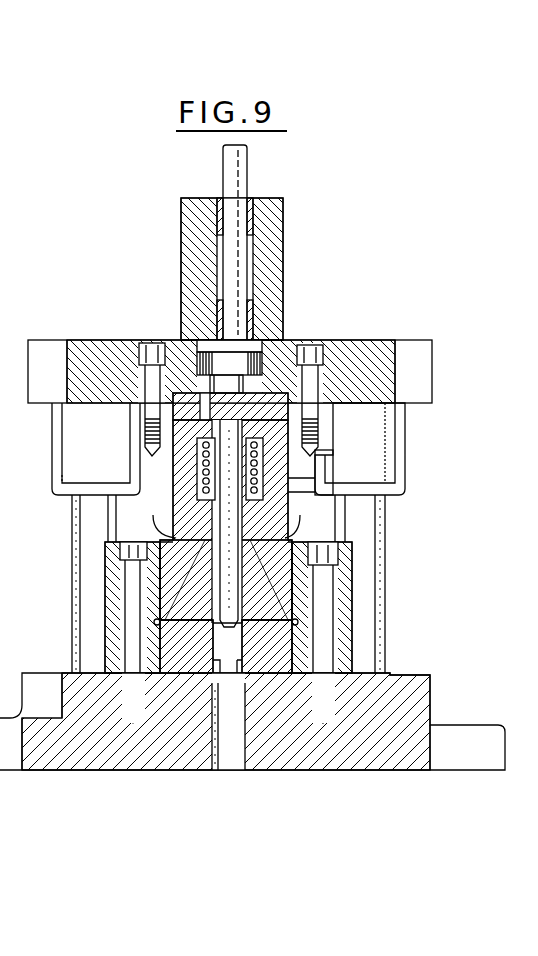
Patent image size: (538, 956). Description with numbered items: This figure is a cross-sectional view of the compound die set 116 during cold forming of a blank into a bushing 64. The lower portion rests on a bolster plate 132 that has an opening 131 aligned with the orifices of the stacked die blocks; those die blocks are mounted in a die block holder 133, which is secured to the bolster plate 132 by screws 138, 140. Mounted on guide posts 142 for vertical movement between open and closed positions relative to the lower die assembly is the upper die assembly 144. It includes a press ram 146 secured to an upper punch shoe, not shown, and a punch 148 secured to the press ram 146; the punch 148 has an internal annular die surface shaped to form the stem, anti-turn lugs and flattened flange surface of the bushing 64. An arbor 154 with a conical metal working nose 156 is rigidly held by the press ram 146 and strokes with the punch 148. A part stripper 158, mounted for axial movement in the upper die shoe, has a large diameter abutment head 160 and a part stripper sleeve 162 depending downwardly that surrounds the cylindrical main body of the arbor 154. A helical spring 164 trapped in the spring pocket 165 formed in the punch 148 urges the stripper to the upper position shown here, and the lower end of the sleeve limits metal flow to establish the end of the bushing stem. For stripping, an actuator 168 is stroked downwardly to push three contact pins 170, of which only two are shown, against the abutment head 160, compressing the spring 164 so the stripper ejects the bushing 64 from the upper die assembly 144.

The compound die set 116 is at (356, 326).
The opening 131 is at (225, 771).
The bolster plate 132 is at (103, 771).
The die block holder 133 is at (90, 632).
The screw 138 is at (323, 627).
The screw 140 is at (132, 638).
The guide posts 142 is at (80, 535).
The upper die assembly 144 is at (140, 332).
The press ram 146 is at (283, 237).
The punch 148 is at (207, 509).
The arbor 154 is at (318, 462).
The conical metal working nose 156 is at (230, 600).
The part stripper 158 is at (276, 486).
The abutment head 160 is at (282, 429).
The part stripper sleeve 162 is at (207, 513).
The helical spring 164 is at (207, 457).
The spring pocket 165 is at (197, 467).
The actuator 168 is at (240, 172).
The contact pins 170 is at (243, 355).
The bushing 64 is at (133, 584).